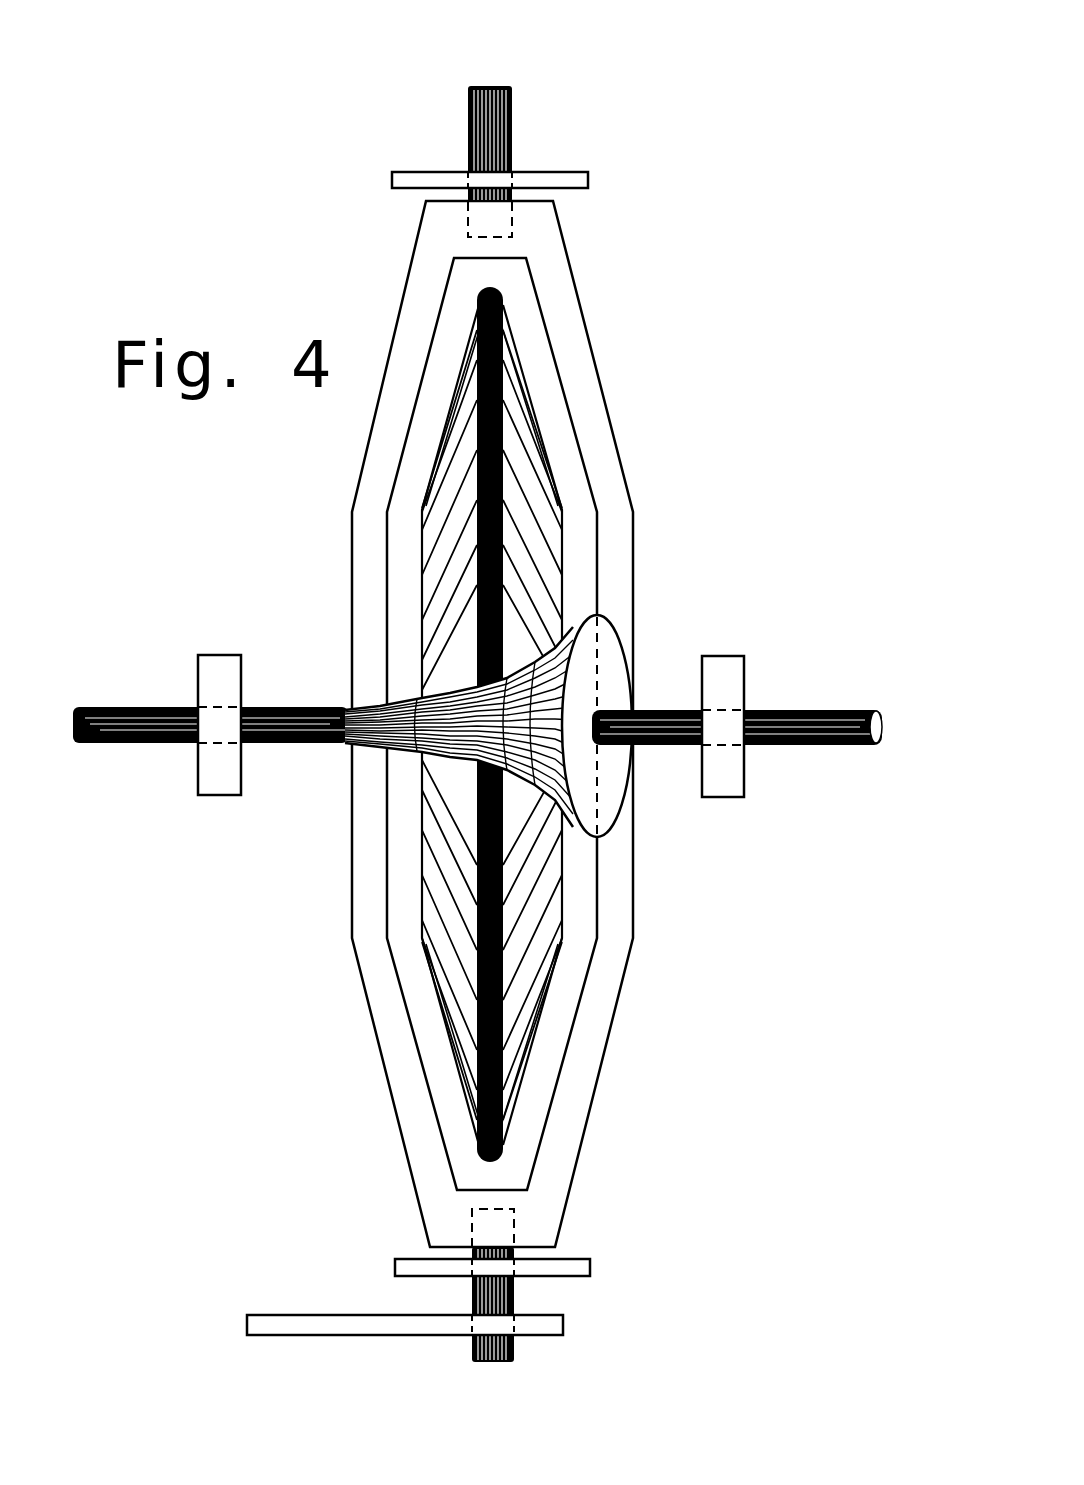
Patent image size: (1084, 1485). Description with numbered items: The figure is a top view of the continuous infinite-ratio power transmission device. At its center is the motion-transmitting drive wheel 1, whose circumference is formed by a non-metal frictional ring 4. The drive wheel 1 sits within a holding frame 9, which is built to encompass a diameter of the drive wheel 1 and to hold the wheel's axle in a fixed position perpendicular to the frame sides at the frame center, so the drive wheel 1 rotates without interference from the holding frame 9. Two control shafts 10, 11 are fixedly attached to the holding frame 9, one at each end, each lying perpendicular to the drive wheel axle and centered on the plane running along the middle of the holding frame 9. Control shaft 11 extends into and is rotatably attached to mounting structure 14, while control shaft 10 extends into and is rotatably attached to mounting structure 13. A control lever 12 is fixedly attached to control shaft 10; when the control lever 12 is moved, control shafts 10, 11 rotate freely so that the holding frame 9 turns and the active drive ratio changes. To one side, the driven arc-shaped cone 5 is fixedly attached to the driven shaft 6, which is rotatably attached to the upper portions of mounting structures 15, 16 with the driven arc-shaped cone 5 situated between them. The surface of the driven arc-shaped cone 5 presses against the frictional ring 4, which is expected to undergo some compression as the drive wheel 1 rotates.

The drive wheel 1 is at (547, 435).
The frictional ring 4 is at (503, 298).
The driven arc-shaped cone 5 is at (618, 648).
The driven shaft 6 is at (668, 747).
The holding frame 9 is at (617, 537).
The control shaft 10 is at (473, 1298).
The control shaft 11 is at (512, 112).
The control lever 12 is at (253, 1327).
The mounting structure 13 is at (400, 1268).
The mounting structure 14 is at (583, 177).
The mounting structure 15 is at (218, 660).
The mounting structure 16 is at (723, 678).